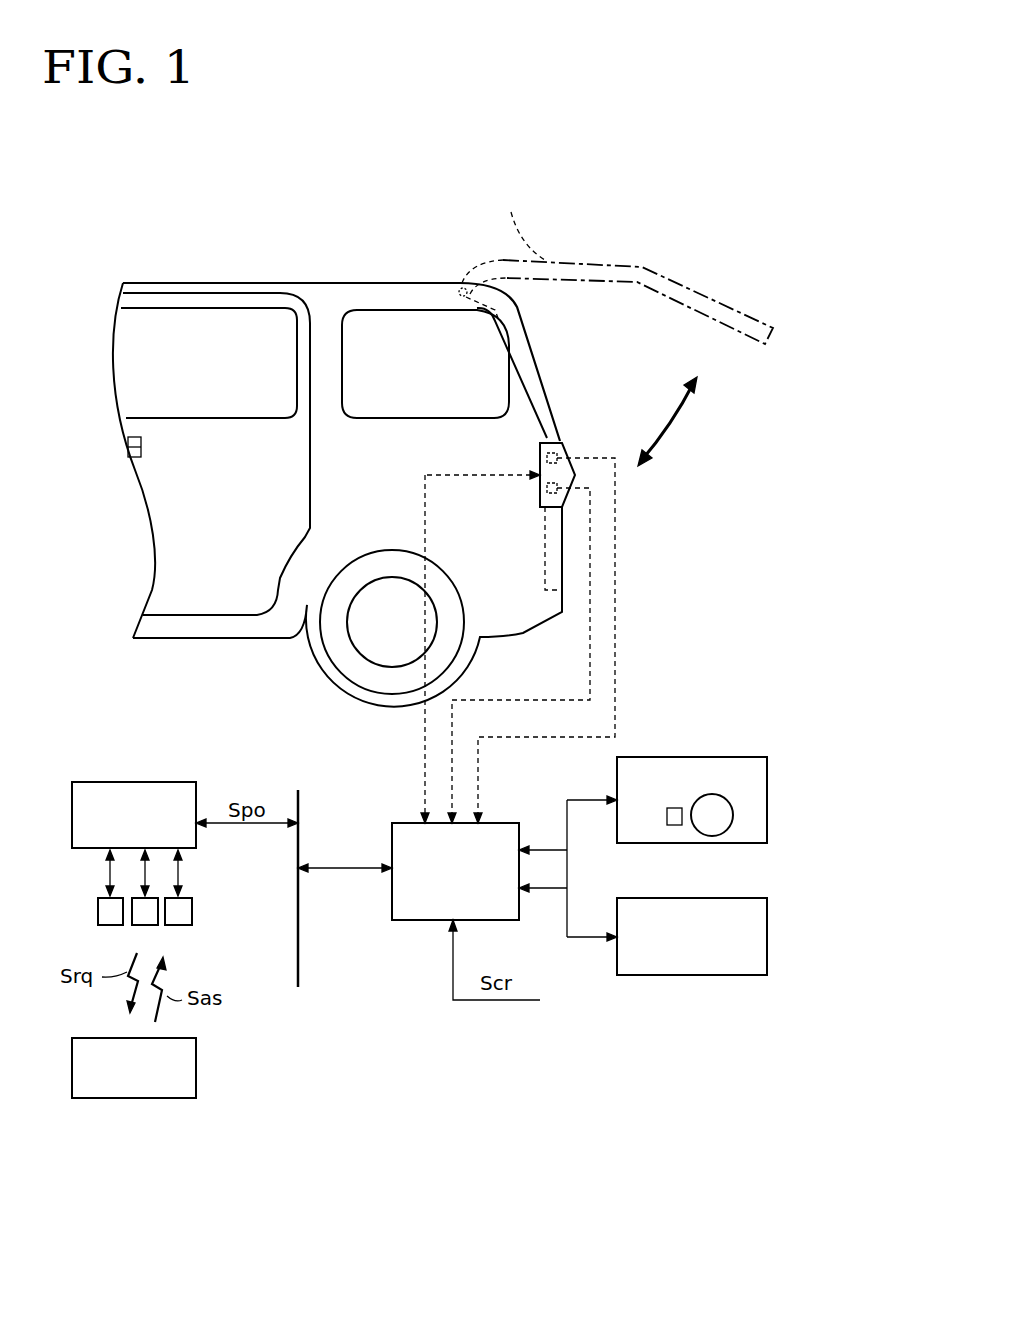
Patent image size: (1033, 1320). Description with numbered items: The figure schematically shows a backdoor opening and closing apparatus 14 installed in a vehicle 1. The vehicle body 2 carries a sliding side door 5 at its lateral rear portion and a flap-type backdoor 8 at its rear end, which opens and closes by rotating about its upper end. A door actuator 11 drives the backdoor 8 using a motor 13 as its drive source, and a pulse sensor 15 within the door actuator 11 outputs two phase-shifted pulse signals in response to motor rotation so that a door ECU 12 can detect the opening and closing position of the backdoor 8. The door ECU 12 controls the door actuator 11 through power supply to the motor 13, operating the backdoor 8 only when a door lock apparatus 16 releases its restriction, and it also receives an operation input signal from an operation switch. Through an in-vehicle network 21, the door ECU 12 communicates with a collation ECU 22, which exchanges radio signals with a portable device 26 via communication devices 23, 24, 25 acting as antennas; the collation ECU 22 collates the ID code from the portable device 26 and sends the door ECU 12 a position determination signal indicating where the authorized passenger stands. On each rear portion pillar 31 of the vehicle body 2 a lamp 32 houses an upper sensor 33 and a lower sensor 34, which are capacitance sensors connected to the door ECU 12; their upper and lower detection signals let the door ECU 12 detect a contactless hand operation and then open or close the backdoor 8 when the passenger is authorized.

The vehicle 1 is at (108, 272).
The vehicle body 2 is at (188, 283).
The side door 5 is at (158, 492).
The backdoor 8 is at (545, 440).
The door actuator 11 is at (712, 757).
The door ECU 12 is at (420, 920).
The motor 13 is at (711, 830).
The backdoor opening and closing apparatus 14 is at (647, 1137).
The pulse sensor 15 is at (672, 825).
The door lock apparatus 16 is at (767, 937).
The in-vehicle network 21 is at (298, 967).
The collation ECU 22 is at (143, 782).
The communication device 23 is at (98, 908).
The communication device 24 is at (145, 925).
The communication device 25 is at (192, 908).
The portable device 26 is at (196, 1072).
The rear portion pillar 31 is at (518, 360).
The lamp 32 is at (563, 443).
The upper sensor 33 is at (547, 455).
The lower sensor 34 is at (547, 490).